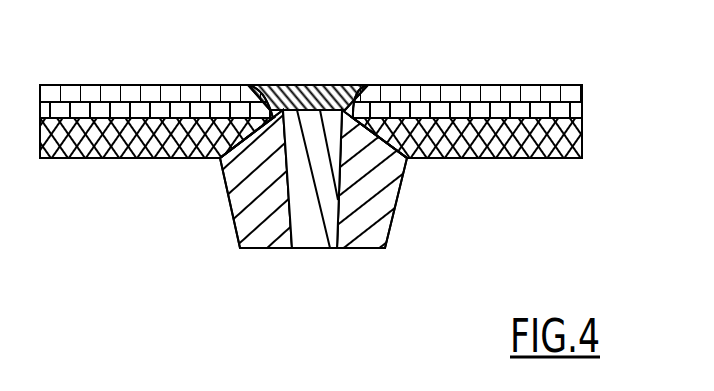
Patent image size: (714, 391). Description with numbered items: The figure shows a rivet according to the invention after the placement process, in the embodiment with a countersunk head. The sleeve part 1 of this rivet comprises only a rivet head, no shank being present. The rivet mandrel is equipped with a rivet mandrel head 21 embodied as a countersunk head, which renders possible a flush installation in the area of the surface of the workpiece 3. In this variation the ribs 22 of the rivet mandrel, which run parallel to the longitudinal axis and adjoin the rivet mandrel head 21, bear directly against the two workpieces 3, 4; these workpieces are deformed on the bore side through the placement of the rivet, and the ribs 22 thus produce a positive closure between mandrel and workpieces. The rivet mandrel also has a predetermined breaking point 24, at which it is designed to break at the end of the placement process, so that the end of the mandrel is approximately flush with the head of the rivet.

The sleeve part 1 is at (214, 217).
The workpiece 3 is at (565, 97).
The workpiece 4 is at (568, 135).
The rivet mandrel head 21 is at (335, 85).
The ribs 22 is at (285, 85).
The predetermined breaking point 24 is at (303, 250).